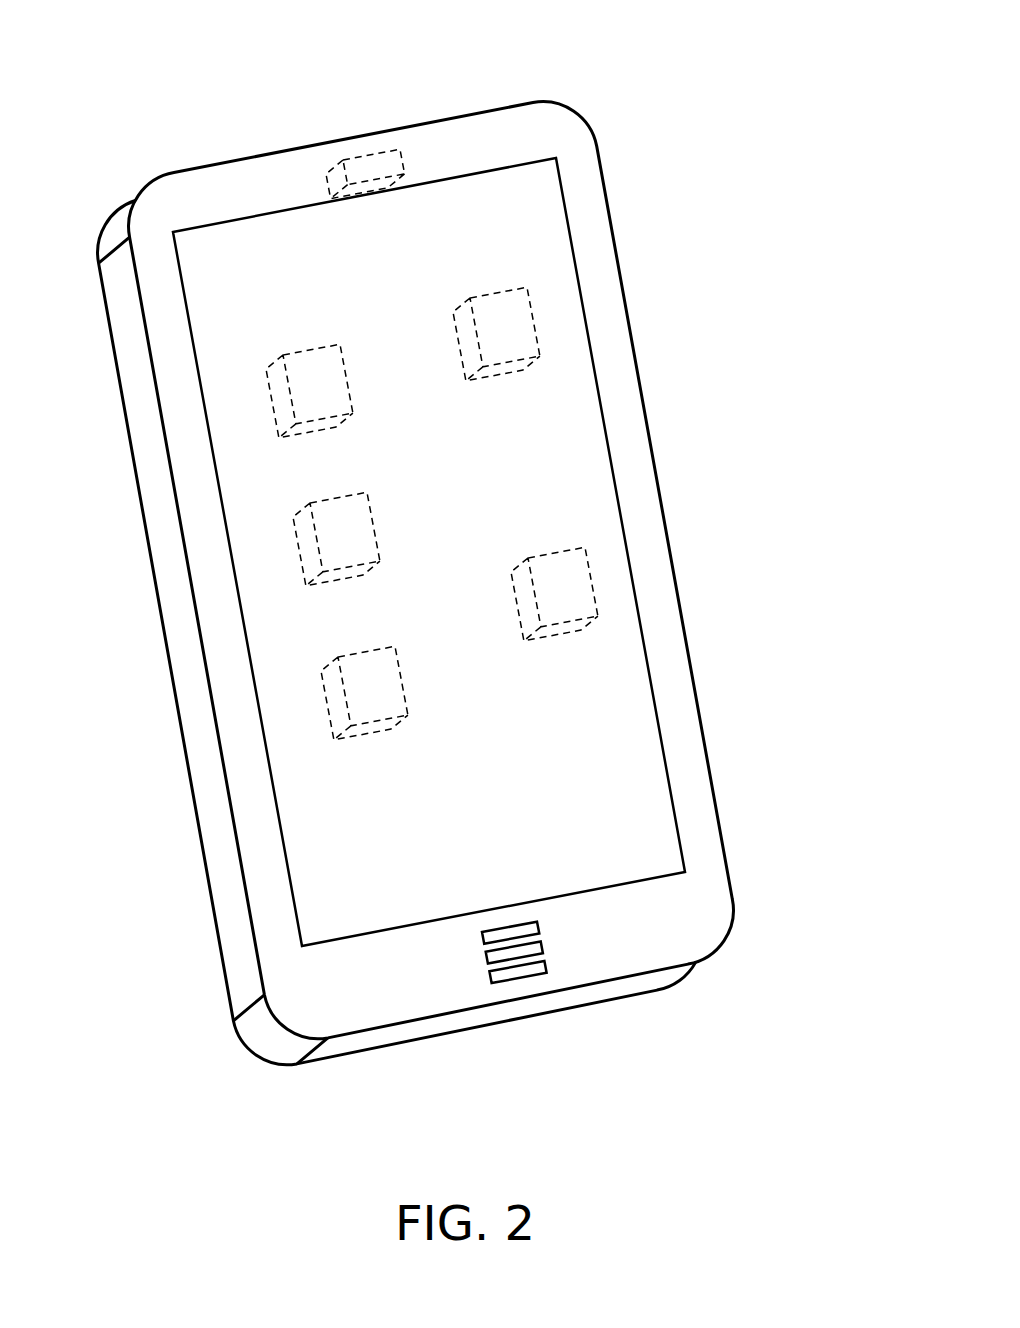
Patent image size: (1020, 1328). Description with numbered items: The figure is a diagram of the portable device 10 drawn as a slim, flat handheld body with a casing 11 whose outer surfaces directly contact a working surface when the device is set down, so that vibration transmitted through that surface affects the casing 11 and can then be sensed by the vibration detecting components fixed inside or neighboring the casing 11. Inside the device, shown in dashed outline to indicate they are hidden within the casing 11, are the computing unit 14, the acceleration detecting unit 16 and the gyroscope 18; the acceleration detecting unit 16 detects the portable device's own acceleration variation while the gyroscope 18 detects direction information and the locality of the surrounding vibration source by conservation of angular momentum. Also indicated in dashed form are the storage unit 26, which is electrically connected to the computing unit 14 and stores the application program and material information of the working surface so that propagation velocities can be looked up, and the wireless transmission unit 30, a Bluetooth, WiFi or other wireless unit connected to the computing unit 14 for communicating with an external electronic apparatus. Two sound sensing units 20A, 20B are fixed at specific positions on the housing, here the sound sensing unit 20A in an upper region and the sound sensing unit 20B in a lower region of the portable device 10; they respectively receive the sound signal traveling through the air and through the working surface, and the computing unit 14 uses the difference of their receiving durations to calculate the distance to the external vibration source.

The portable device 10 is at (600, 105).
The casing 11 is at (715, 693).
The computing unit 14 is at (274, 412).
The acceleration detecting unit 16 is at (297, 557).
The gyroscope 18 is at (329, 713).
The storage unit 26 is at (535, 308).
The wireless transmission unit 30 is at (595, 587).
The sound sensing unit 20A is at (385, 147).
The sound sensing unit 20B is at (518, 980).